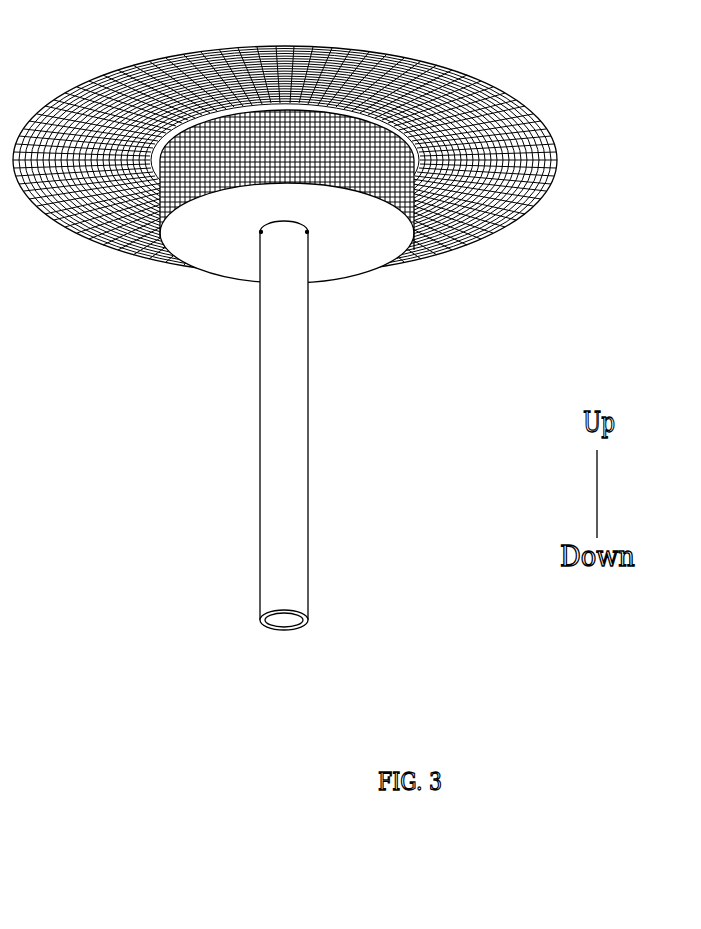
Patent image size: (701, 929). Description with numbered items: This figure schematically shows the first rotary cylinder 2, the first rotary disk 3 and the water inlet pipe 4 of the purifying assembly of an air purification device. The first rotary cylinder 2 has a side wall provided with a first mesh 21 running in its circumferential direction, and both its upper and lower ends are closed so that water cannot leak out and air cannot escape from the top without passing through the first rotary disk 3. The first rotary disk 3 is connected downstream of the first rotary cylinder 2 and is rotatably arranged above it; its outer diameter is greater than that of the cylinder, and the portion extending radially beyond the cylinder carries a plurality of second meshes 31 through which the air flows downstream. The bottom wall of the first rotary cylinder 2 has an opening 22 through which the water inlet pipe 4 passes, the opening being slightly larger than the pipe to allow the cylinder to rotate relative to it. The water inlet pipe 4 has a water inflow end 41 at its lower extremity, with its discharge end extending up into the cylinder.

The first rotary cylinder 2 is at (337, 225).
The first mesh 21 is at (450, 193).
The opening 22 is at (313, 230).
The first rotary disk 3 is at (415, 61).
The second mesh 31 is at (97, 83).
The water inlet pipe 4 is at (268, 470).
The water inflow end 41 is at (285, 621).